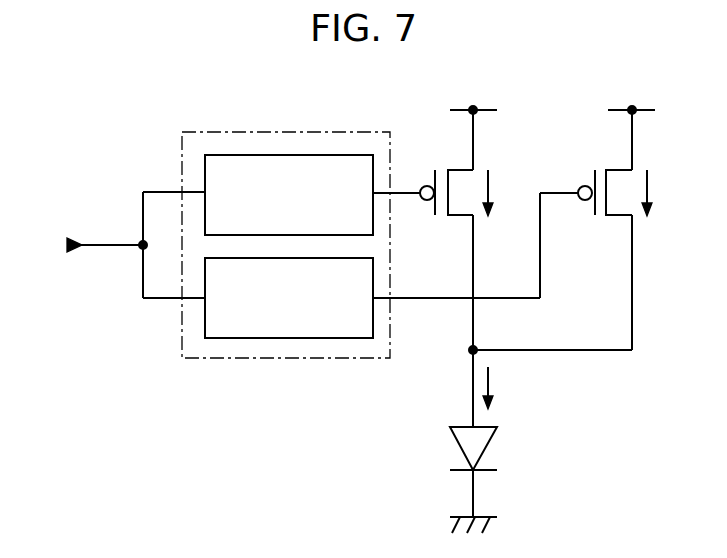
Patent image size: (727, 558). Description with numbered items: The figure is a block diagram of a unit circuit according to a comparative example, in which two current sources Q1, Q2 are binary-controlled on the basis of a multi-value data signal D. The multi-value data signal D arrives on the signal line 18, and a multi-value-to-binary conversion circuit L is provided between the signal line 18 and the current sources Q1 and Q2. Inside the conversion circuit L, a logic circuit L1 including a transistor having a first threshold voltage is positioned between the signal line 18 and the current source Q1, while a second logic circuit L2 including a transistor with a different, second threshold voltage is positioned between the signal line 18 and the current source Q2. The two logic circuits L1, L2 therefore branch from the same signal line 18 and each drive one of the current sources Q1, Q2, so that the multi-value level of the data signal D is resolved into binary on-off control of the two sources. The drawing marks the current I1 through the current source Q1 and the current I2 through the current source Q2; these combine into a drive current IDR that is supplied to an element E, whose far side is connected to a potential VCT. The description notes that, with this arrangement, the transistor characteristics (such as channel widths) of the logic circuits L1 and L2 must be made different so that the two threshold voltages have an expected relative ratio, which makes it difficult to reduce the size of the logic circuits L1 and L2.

The signal line 18 is at (107, 241).
The multi-value data signal D is at (63, 246).
The multi-value-to-binary conversion circuit L is at (180, 157).
The logic circuit L1 is at (287, 153).
The logic circuit L2 is at (287, 340).
The current source Q1 is at (463, 216).
The current source Q2 is at (618, 216).
The first current I1 is at (500, 193).
The second current I2 is at (658, 193).
The drive current IDR is at (511, 388).
The light emitting element E is at (461, 448).
The cathode potential VCT is at (499, 518).